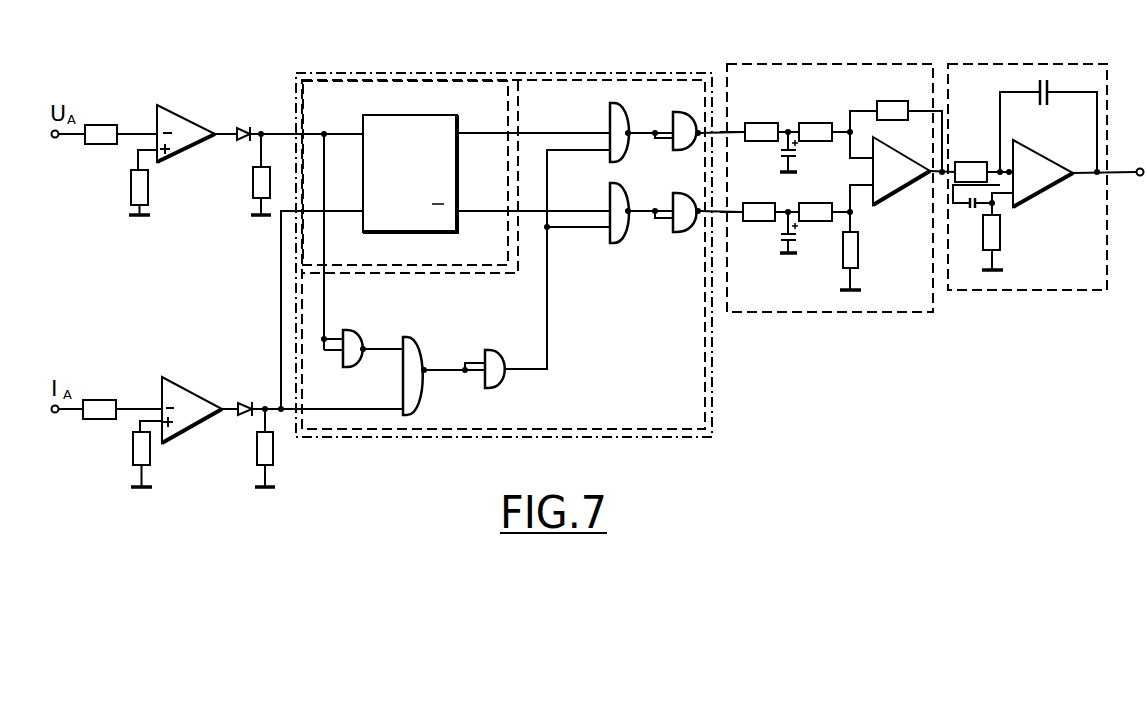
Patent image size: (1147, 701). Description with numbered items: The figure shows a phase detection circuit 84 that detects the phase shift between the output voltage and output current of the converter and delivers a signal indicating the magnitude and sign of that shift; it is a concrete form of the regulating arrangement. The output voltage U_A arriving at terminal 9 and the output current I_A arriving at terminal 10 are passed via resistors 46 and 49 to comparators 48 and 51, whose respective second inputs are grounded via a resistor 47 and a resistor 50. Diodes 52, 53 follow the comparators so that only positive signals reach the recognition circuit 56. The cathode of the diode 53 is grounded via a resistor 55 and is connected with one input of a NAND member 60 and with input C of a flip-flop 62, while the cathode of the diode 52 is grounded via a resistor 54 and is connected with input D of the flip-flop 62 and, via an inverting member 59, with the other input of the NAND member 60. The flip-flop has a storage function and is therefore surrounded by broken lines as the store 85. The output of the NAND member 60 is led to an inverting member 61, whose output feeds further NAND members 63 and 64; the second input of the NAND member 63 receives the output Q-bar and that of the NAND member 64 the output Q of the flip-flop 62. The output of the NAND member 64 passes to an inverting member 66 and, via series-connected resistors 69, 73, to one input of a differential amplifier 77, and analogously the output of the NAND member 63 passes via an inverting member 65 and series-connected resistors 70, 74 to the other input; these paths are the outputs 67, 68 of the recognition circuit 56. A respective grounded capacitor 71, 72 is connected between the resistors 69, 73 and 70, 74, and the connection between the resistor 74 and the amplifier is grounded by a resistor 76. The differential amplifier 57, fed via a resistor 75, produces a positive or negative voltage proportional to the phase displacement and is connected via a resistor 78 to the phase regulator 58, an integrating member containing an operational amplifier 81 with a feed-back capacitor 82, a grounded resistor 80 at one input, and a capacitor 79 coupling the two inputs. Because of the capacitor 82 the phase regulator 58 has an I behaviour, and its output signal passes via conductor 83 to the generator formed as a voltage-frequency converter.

The voltage input terminal 9 is at (55, 138).
The current input terminal 10 is at (55, 413).
The resistor 46 is at (96, 124).
The resistor 47 is at (148, 189).
The comparator 48 is at (182, 118).
The resistor 49 is at (96, 399).
The resistor 50 is at (133, 441).
The comparator 51 is at (191, 427).
The diode 52 is at (246, 127).
The diode 53 is at (243, 401).
The resistor 54 is at (253, 187).
The resistor 55 is at (273, 453).
The recognition circuit 56 is at (386, 442).
The differential amplifier 57 is at (906, 312).
The phase regulator 58 is at (1038, 292).
The inverting member 59 is at (355, 338).
The NAND member 60 is at (411, 348).
The inverting member 61 is at (496, 352).
The flip-flop 62 is at (396, 177).
The NAND member 63 is at (615, 238).
The NAND member 64 is at (605, 120).
The inverting member 65 is at (683, 240).
The inverting member 66 is at (672, 122).
The output 67 is at (727, 131).
The output 68 is at (733, 222).
The resistor 69 is at (770, 122).
The resistor 70 is at (752, 203).
The capacitor 71 is at (797, 155).
The capacitor 72 is at (787, 250).
The resistor 73 is at (812, 122).
The resistor 74 is at (818, 222).
The resistor 75 is at (885, 101).
The resistor 76 is at (858, 250).
The differential amplifier 77 is at (895, 190).
The resistor 78 is at (968, 162).
The capacitor 79 is at (967, 210).
The resistor 80 is at (1000, 240).
The operational amplifier 81 is at (1045, 185).
The feed-back capacitor 82 is at (1048, 100).
The conductor 83 is at (1134, 178).
The phase detection circuit 84 is at (700, 382).
The store 85 is at (345, 85).